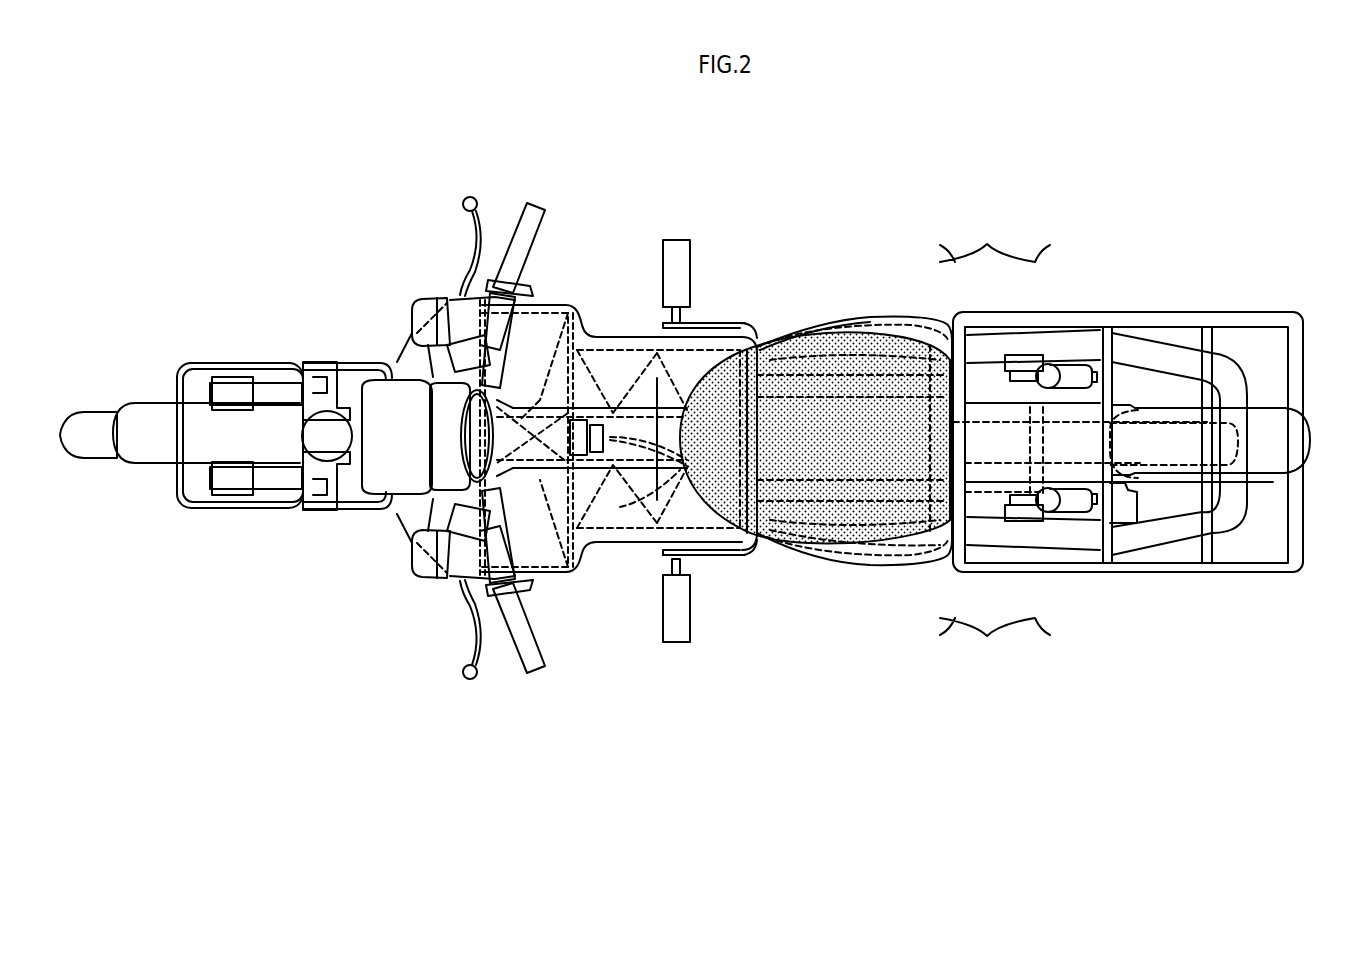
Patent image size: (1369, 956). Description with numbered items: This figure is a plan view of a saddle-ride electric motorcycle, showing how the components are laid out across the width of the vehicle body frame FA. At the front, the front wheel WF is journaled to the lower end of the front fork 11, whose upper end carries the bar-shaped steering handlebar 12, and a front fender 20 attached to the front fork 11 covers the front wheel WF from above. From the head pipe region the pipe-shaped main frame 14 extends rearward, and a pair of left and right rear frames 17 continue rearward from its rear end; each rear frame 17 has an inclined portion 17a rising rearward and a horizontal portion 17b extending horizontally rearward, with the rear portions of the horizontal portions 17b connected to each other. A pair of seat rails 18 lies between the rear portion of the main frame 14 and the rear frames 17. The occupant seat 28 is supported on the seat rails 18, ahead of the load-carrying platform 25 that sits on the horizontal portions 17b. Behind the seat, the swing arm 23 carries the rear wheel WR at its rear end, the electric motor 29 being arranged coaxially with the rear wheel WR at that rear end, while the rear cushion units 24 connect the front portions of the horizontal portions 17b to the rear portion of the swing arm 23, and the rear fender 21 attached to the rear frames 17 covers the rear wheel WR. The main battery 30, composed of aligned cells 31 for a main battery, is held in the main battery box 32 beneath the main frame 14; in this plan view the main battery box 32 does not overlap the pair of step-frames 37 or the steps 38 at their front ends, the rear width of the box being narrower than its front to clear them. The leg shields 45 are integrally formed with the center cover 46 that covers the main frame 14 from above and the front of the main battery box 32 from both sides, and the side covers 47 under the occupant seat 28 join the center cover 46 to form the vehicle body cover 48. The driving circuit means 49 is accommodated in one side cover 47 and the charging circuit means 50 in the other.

The front fork 11 is at (267, 397).
The steering handlebar 12 is at (520, 245).
The main frame 14 is at (535, 345).
The rear frames 17 is at (995, 443).
The inclined portions 17a is at (940, 338).
The horizontal portions 17b is at (1028, 340).
The seat rails 18 is at (865, 330).
The front fender 20 is at (233, 433).
The rear fender 21 is at (1270, 430).
The swing arm 23 is at (990, 483).
The rear cushion units 24 is at (1075, 368).
The load-carrying platform 25 is at (1240, 322).
The occupant seat 28 is at (822, 370).
The electric motor 29 is at (1120, 500).
The main battery 30 is at (708, 345).
The cells for a main battery 31 is at (645, 540).
The main battery box 32 is at (592, 345).
The step-frames 37 is at (745, 330).
The steps 38 is at (672, 250).
The leg shields 45 is at (425, 300).
The center cover 46 is at (700, 322).
The side covers 47 is at (903, 328).
The vehicle body cover 48 is at (768, 345).
The driving circuit means 49 is at (828, 550).
The charging circuit means 50 is at (848, 335).
The vehicle body frame FA is at (613, 408).
The front wheel WF is at (100, 448).
The rear wheel WR is at (1157, 423).